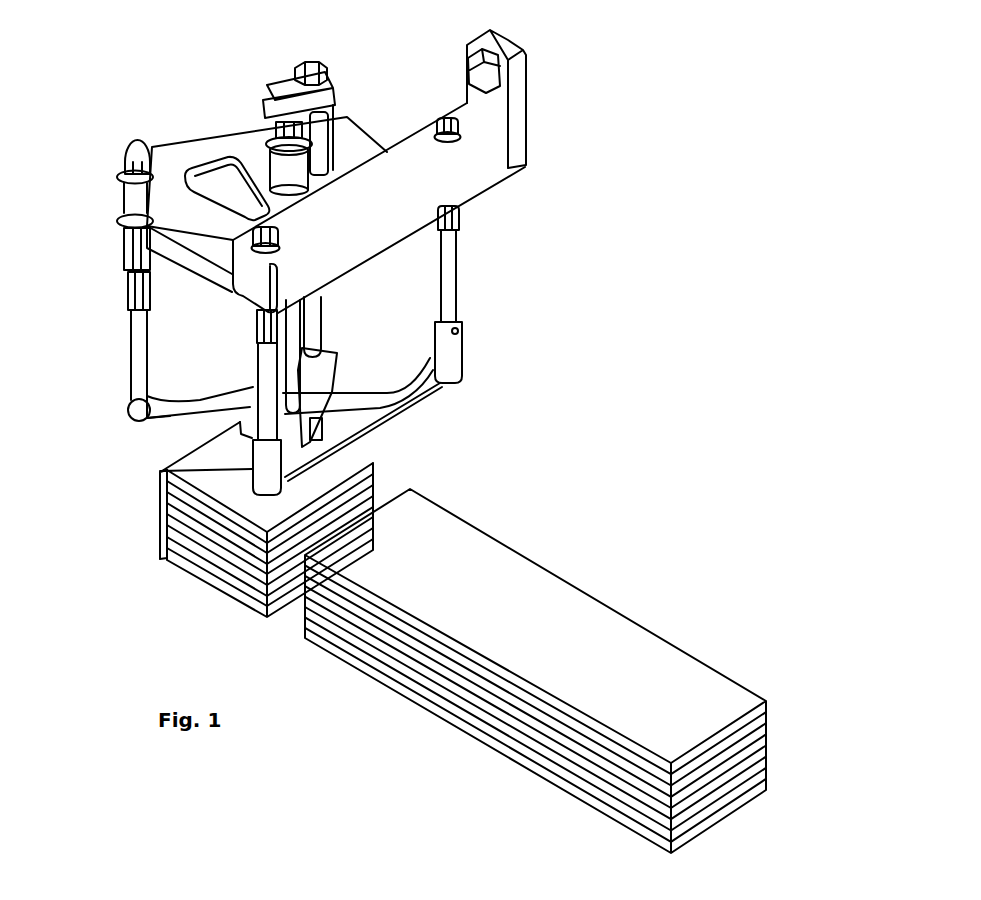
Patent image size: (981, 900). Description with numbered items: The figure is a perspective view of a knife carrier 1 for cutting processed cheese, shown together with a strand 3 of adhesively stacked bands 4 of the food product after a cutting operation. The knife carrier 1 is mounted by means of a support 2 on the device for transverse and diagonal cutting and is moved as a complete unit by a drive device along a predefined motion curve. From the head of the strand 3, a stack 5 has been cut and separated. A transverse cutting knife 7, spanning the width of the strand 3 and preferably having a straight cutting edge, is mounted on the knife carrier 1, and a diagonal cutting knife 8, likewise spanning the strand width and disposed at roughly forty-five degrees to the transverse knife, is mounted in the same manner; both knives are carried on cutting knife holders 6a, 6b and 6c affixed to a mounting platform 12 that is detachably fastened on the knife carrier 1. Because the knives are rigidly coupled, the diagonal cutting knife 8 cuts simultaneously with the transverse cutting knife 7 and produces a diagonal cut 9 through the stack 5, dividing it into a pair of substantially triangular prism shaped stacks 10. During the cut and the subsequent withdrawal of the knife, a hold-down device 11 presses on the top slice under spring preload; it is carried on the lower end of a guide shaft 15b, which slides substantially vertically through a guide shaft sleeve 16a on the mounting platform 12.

The knife carrier 1 is at (511, 220).
The support 2 is at (560, 62).
The strand 3 is at (550, 671).
The bands 4 is at (778, 713).
The stack 5 is at (417, 457).
The cutting knife holder 6a is at (458, 330).
The cutting knife holder 6b is at (244, 377).
The cutting knife holder 6c is at (114, 376).
The transverse cutting knife 7 is at (436, 413).
The diagonal cutting knife 8 is at (162, 423).
The diagonal cut 9 is at (161, 488).
The triangular prism shaped stacks 10 is at (266, 514).
The hold-down device 11 is at (350, 342).
The mounting platform 12 is at (207, 119).
The guide shaft 15b is at (326, 297).
The guide shaft sleeve 16a is at (262, 178).